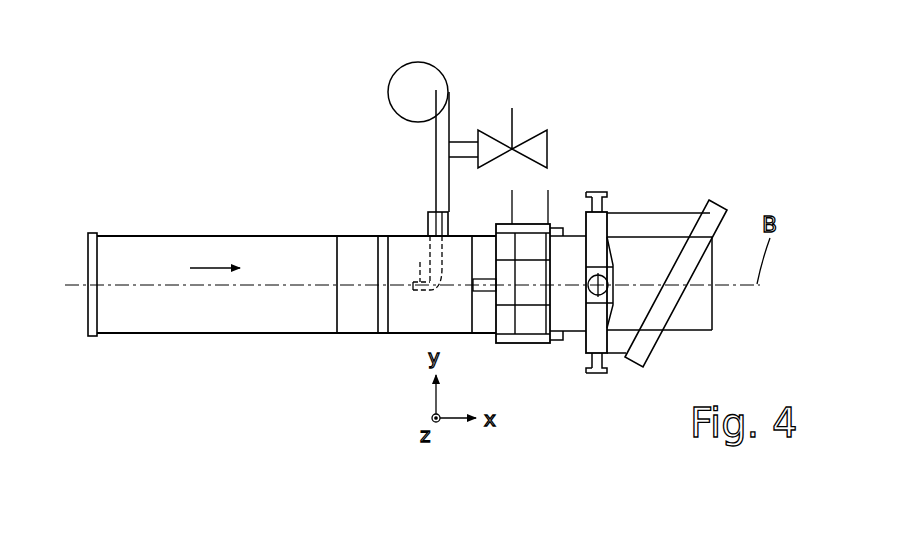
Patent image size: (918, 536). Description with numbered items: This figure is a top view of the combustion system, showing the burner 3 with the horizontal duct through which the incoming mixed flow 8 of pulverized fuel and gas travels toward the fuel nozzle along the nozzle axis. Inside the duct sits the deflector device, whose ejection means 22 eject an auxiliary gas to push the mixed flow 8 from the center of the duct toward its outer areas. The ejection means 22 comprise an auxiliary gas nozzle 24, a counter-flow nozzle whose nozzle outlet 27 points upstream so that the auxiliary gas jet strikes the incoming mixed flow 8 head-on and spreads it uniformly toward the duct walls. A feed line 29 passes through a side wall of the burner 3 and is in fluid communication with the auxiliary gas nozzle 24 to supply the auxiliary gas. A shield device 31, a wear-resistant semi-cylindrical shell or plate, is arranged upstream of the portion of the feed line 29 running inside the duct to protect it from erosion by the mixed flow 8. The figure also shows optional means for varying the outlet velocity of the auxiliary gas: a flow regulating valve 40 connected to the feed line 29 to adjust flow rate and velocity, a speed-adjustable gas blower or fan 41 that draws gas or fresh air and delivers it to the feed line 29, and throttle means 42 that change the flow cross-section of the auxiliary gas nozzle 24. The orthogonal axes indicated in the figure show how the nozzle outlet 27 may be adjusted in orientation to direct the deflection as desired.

The burner 3 is at (108, 218).
The mixed flow of pulverized fuel and gas 8 is at (210, 263).
The ejection means 22 is at (384, 319).
The auxiliary gas nozzle 24 is at (402, 247).
The nozzle outlet 27 is at (412, 282).
The feed line 29 is at (443, 125).
The shield device 31 is at (428, 218).
The flow regulating valve 40 is at (542, 145).
The gas blower or fan 41 is at (407, 82).
The throttle means 42 is at (416, 296).